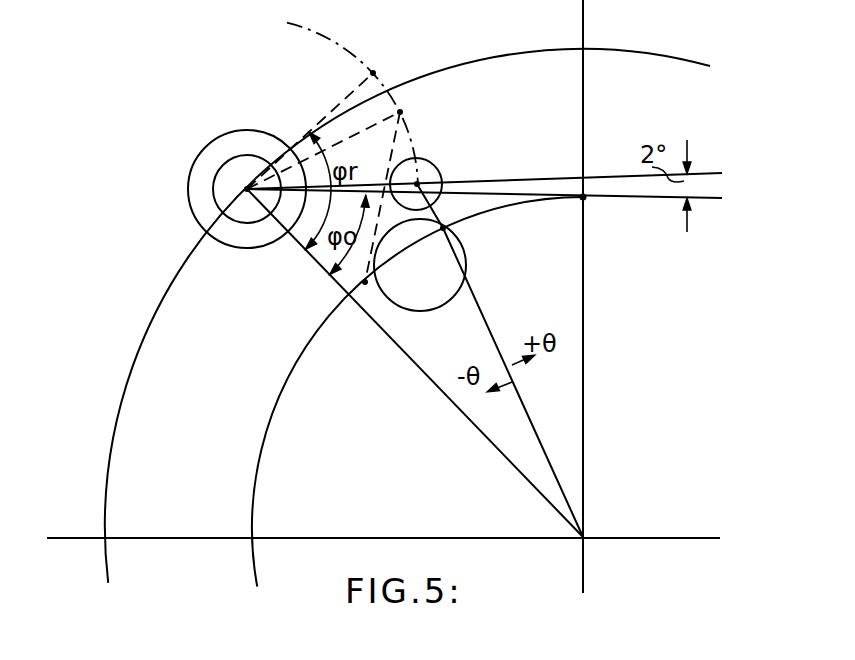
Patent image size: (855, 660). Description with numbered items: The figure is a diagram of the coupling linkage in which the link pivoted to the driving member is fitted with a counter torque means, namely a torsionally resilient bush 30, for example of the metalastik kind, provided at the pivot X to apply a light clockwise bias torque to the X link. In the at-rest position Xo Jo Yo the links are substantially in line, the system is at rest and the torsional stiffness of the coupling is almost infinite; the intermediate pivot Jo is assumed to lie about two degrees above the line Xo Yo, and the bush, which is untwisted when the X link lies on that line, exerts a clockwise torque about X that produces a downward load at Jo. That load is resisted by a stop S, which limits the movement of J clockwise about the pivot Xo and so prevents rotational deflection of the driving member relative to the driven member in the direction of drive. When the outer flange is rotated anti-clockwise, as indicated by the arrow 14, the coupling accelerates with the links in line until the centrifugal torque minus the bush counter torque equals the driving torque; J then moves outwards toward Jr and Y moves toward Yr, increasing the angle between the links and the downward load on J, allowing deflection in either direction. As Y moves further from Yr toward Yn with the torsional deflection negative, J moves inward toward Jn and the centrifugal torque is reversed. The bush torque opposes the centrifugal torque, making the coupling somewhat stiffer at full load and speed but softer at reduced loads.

The anti-clockwise rotation direction of the outer flange 14 is at (83, 285).
The torsionally resilient bush 30 is at (218, 152).
The at-rest position of pivot X Xo is at (236, 193).
The at-rest position of pivot Y Yo is at (598, 210).
The negative-deflection position of pivot Y Yn is at (365, 282).
The radial position of pivot Y Yr is at (446, 240).
The radial position of pivot J Jr is at (382, 59).
The negative-deflection position of pivot J Jn is at (415, 109).
The at-rest position of pivot J Jo is at (420, 180).
The stop S is at (429, 304).